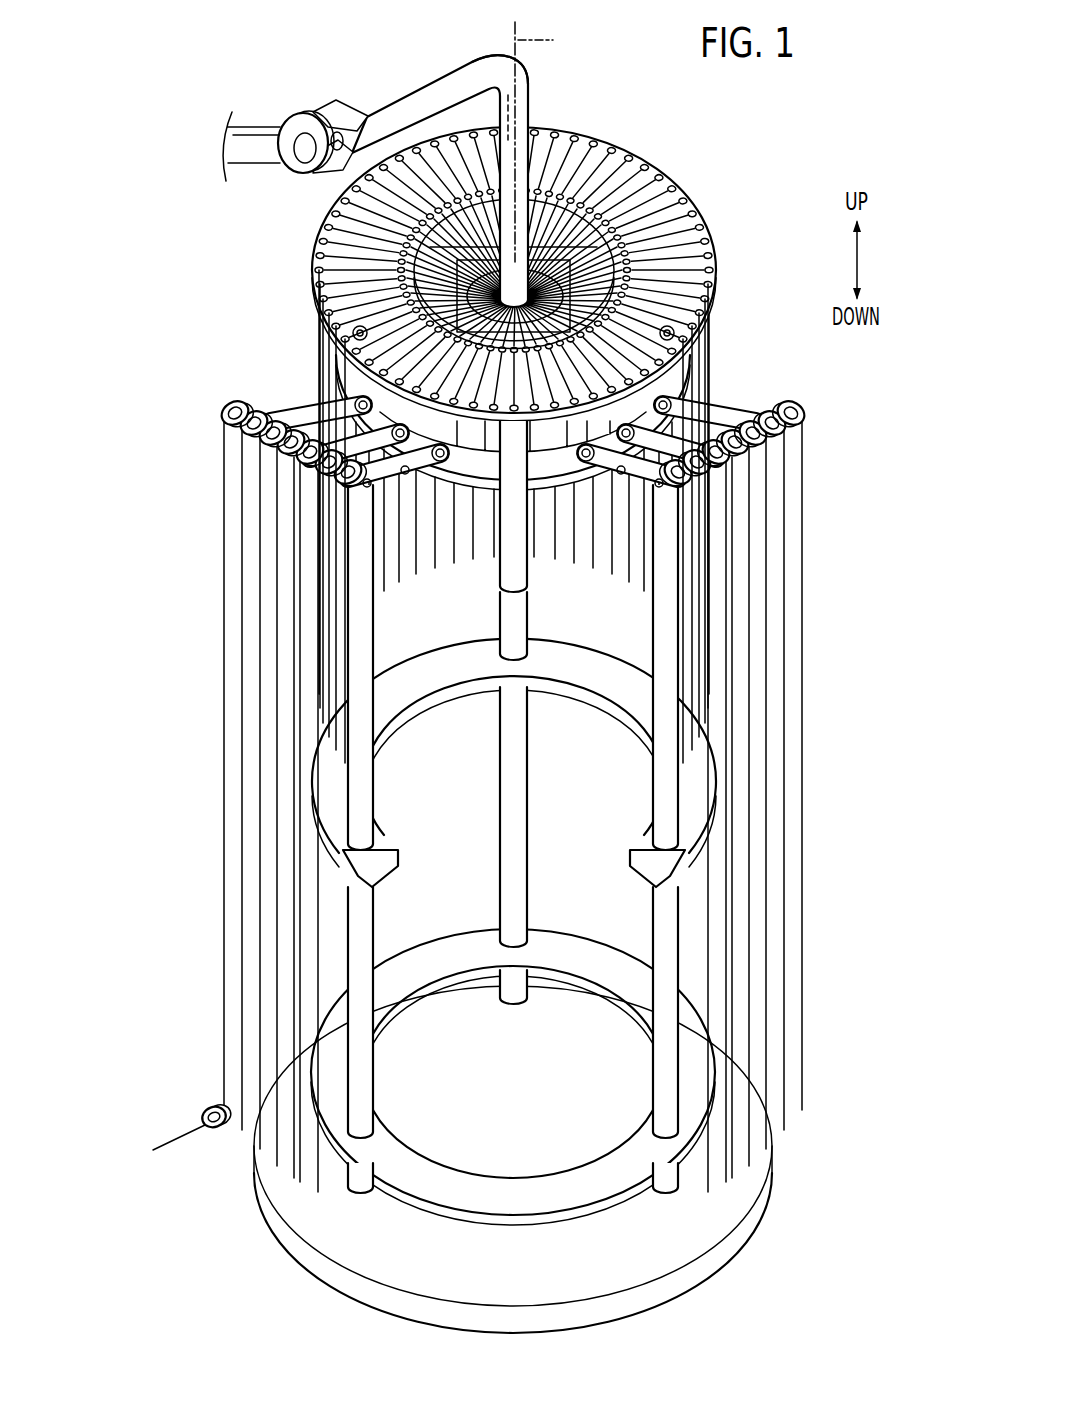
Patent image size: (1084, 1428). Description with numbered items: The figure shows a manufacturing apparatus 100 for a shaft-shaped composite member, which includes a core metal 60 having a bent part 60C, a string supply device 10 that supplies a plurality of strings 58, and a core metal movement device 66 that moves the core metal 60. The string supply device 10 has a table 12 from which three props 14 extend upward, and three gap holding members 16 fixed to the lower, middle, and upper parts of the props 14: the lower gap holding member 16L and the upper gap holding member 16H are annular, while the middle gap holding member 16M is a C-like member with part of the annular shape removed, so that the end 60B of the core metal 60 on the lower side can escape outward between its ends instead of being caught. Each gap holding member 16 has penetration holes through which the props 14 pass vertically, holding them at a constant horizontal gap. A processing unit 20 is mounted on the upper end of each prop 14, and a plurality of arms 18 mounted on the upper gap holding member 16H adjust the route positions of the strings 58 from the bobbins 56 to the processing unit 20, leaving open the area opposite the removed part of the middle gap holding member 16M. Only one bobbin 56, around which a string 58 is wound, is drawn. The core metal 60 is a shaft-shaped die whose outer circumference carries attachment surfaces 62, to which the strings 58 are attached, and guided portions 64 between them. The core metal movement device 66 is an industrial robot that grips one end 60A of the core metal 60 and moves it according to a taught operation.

The manufacturing apparatus 100 is at (862, 97).
The string supply device 10 is at (488, 434).
The table 12 is at (742, 1222).
The prop 14 is at (513, 1002).
The gap holding member 16 is at (513, 932).
The upper gap holding member 16H is at (552, 462).
The middle gap holding member 16M is at (592, 673).
The lower gap holding member 16L is at (592, 966).
The arm 18 is at (228, 408).
The processing unit 20 is at (700, 193).
The bobbin 56 is at (211, 1108).
The string 58 is at (224, 642).
The core metal 60 is at (475, 317).
The one end of the core metal 60A is at (355, 148).
The end of the core metal on the lower side 60B is at (497, 571).
The bent part 60C is at (530, 76).
The attachment surface 62 is at (407, 115).
The guided portion 64 is at (508, 122).
The core metal movement device 66 is at (284, 108).